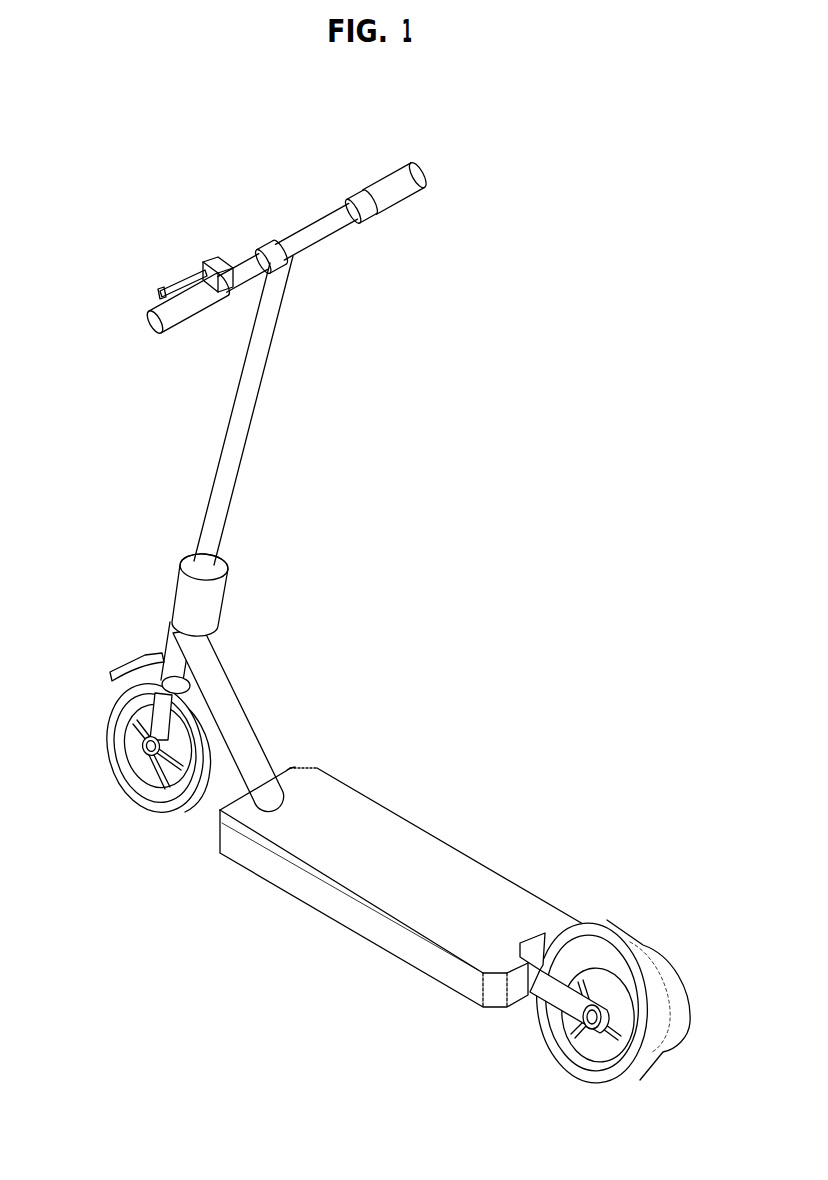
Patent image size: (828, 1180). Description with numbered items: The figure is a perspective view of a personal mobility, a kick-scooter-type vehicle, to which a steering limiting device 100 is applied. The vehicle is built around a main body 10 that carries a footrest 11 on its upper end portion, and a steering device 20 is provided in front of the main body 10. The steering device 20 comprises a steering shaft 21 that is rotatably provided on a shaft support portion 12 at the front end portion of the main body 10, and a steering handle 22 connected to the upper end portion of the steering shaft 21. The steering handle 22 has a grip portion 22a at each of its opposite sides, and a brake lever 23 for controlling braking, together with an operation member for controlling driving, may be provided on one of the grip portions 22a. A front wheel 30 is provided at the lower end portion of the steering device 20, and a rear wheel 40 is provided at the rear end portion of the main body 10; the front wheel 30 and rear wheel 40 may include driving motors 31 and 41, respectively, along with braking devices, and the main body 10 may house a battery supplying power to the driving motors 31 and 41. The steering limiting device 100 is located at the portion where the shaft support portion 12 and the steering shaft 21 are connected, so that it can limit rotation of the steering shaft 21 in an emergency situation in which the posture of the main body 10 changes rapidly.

The steering limiting device 100 is at (175, 561).
The main body 10 is at (345, 943).
The footrest 11 is at (387, 827).
The shaft support portion 12 is at (181, 632).
The steering device 20 is at (272, 393).
The steering shaft 21 is at (243, 435).
The steering handle 22 is at (328, 220).
The grip portion 22a is at (395, 190).
The brake lever 23 is at (180, 277).
The front wheel 30 is at (122, 750).
The driving motor 31 is at (163, 767).
The rear wheel 40 is at (615, 1072).
The driving motor 41 is at (600, 1037).